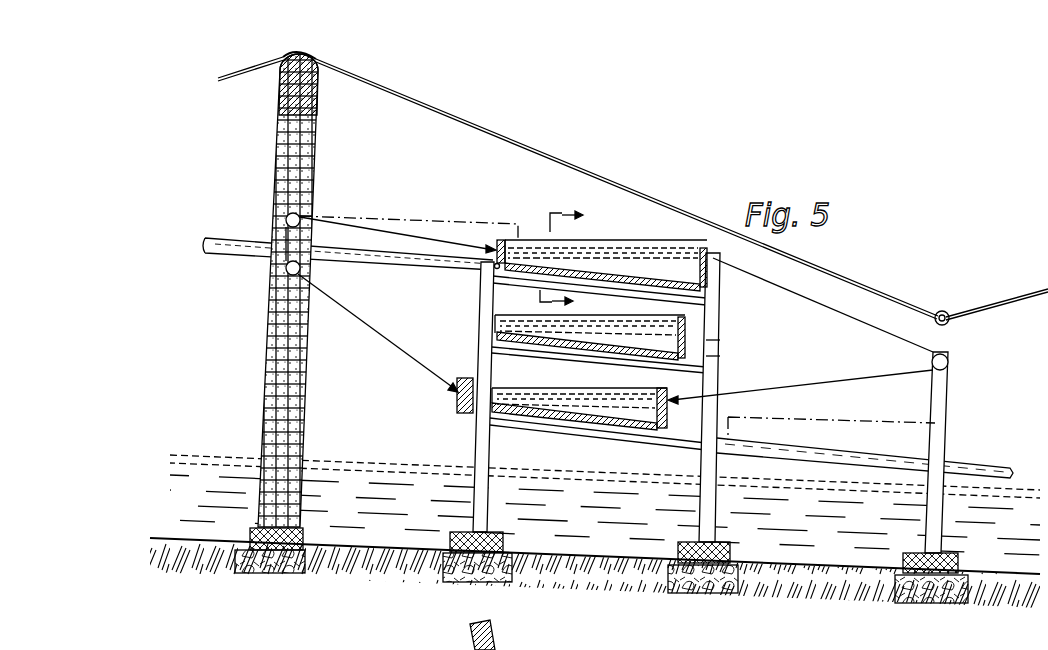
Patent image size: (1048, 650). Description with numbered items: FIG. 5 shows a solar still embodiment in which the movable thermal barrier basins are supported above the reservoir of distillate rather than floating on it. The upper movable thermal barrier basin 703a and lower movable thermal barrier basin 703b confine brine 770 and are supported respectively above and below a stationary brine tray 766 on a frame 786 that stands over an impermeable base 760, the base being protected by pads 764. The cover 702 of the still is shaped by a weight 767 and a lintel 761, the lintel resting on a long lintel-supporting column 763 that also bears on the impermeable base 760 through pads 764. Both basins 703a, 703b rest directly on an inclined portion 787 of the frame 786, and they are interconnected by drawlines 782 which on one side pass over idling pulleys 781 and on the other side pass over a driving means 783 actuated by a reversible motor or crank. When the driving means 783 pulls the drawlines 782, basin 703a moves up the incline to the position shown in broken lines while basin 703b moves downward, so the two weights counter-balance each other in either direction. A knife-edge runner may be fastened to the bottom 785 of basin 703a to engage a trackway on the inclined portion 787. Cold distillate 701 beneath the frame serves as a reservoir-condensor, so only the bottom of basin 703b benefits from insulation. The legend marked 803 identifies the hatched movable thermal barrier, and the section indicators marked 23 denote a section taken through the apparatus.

The cold distillate 701 is at (396, 536).
The cover 702 is at (482, 130).
The upper movable thermal barrier basin 703a is at (712, 282).
The lower movable thermal barrier basin 703b is at (455, 399).
The impermeable base 760 is at (827, 568).
The lintel 761 is at (322, 63).
The lintel-supporting column 763 is at (312, 155).
The pads 764 is at (282, 546).
The stationary brine tray 766 is at (718, 348).
The weight 767 is at (948, 311).
The brine 770 is at (645, 257).
The idling pulleys 781 is at (287, 228).
The drawlines 782 is at (385, 350).
The driving means 783 is at (950, 360).
The bottom of movable basin 785 is at (528, 263).
The frame 786 is at (719, 376).
The inclined portion 787 is at (403, 262).
The movable thermal barrier legend 803 is at (493, 622).
The section line 23- 23 is at (579, 263).